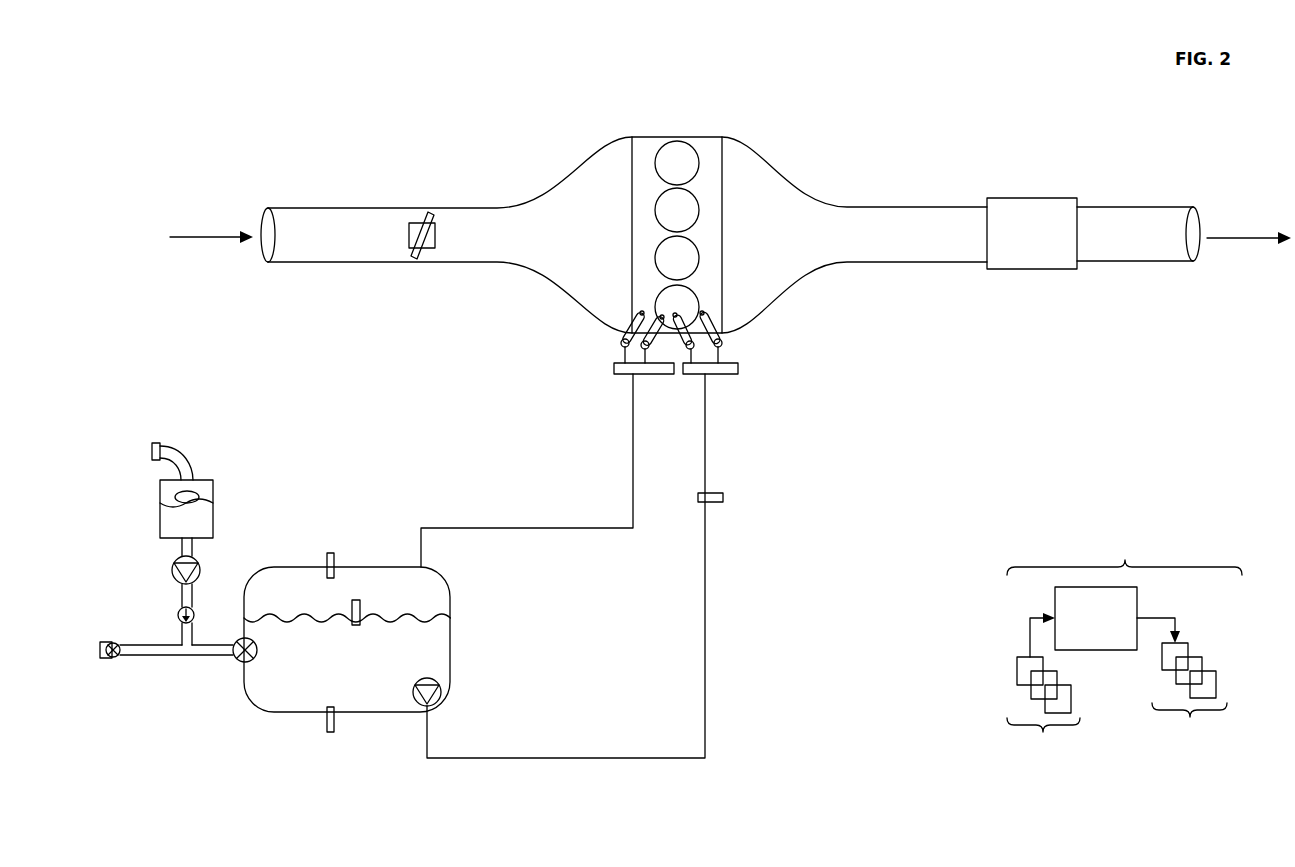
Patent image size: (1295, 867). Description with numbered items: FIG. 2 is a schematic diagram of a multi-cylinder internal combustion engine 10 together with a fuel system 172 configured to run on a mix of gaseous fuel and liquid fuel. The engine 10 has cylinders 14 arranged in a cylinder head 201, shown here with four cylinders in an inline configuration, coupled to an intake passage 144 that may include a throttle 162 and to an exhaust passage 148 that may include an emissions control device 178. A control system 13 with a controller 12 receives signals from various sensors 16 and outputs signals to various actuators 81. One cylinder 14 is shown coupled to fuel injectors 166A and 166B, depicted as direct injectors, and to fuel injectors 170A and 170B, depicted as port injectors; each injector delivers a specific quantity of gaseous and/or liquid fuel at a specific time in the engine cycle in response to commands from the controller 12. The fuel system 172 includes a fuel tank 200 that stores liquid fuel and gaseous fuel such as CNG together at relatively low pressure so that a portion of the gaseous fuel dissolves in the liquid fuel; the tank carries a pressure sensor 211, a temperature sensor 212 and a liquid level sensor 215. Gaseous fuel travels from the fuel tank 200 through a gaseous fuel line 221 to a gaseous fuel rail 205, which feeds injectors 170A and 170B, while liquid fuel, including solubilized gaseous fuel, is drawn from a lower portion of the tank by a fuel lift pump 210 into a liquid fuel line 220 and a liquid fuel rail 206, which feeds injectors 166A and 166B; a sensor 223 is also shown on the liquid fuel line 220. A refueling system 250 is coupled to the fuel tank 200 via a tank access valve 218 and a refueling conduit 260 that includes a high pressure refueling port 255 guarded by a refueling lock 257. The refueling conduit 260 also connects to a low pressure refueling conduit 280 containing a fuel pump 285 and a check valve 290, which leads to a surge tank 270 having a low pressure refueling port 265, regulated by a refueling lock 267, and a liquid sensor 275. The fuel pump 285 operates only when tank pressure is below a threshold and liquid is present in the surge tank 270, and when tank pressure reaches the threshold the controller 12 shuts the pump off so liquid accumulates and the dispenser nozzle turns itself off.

The internal combustion engine 10 is at (836, 104).
The controller 12 is at (1096, 618).
The control system 13 is at (1124, 646).
The cylinders 14 is at (694, 297).
The sensors 16 is at (1043, 692).
The actuators 81 is at (1188, 687).
The intake passage 144 is at (390, 243).
The exhaust passage 148 is at (810, 243).
The throttle 162 is at (435, 241).
The fuel injector 166A is at (620, 338).
The fuel injector 166B is at (722, 344).
The fuel injector 170A is at (616, 366).
The fuel injector 170B is at (738, 366).
The fuel system 172 is at (414, 368).
The emissions control device 178 is at (1044, 244).
The fuel tank 200 is at (251, 702).
The cylinder head 201 is at (722, 217).
The gaseous fuel rail 205 is at (626, 376).
The liquid fuel rail 206 is at (729, 375).
The fuel lift pump 210 is at (423, 708).
The pressure sensor 211 is at (327, 554).
The temperature sensor 212 is at (325, 729).
The liquid level sensor 215 is at (360, 601).
The tank access valve 218 is at (235, 661).
The liquid fuel line 220 is at (705, 562).
The gaseous fuel line 221 is at (635, 466).
The fuel pressure sensor 223 is at (712, 493).
The refueling system 250 is at (133, 428).
The high pressure refueling port 255 is at (119, 645).
The refueling lock 257 is at (104, 660).
The refueling conduit 260 is at (155, 656).
The low pressure refueling port 265 is at (158, 447).
The refueling lock 267 is at (152, 462).
The surge tank 270 is at (158, 522).
The liquid sensor 275 is at (190, 500).
The low pressure refueling conduit 280 is at (182, 592).
The fuel pump 285 is at (200, 568).
The check valve 290 is at (194, 612).